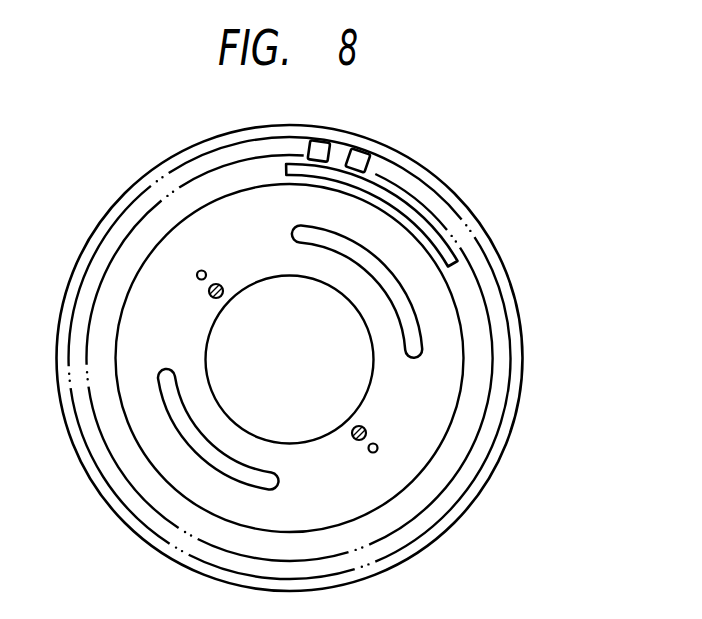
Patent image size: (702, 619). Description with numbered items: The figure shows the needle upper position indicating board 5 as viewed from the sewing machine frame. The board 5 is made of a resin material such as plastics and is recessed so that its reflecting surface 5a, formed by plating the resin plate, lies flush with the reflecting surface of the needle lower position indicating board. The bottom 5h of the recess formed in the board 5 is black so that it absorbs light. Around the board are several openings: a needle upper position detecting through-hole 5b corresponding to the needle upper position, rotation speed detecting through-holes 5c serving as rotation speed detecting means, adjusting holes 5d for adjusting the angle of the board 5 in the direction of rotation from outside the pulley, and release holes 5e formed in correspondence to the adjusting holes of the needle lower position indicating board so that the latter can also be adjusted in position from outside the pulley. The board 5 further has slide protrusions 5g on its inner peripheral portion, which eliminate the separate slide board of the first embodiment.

The needle upper position indicating board 5 is at (598, 357).
The reflecting surface 5a is at (470, 285).
The needle upper position detecting through-hole 5b is at (410, 212).
The rotation speed detecting through-holes 5c is at (361, 160).
The adjusting holes 5d is at (317, 362).
The release holes 5e is at (296, 236).
The slide protrusions 5g is at (287, 398).
The bottom of the recess 5h is at (290, 391).